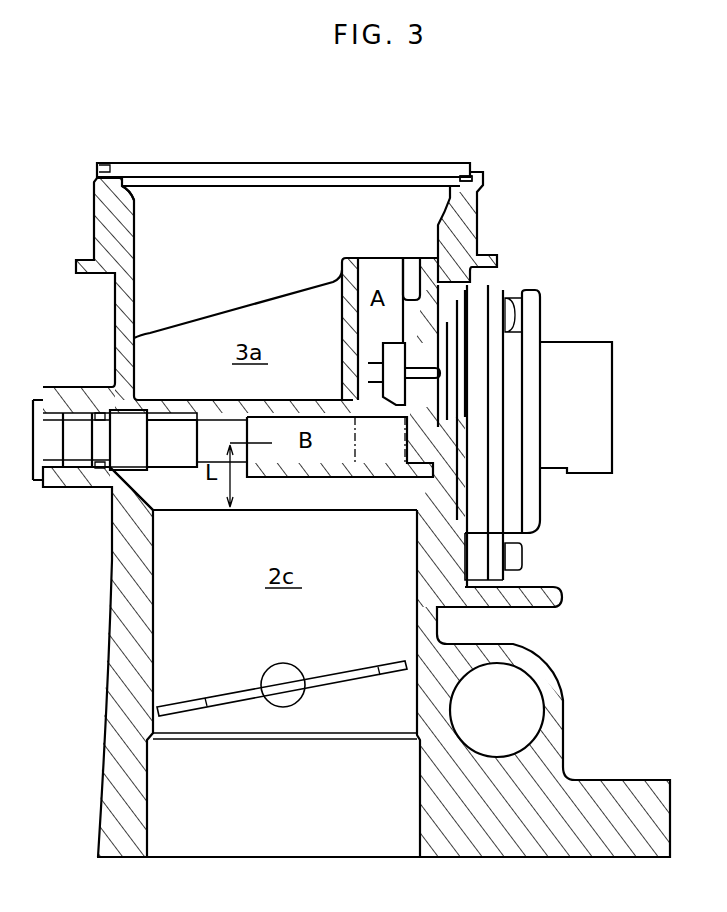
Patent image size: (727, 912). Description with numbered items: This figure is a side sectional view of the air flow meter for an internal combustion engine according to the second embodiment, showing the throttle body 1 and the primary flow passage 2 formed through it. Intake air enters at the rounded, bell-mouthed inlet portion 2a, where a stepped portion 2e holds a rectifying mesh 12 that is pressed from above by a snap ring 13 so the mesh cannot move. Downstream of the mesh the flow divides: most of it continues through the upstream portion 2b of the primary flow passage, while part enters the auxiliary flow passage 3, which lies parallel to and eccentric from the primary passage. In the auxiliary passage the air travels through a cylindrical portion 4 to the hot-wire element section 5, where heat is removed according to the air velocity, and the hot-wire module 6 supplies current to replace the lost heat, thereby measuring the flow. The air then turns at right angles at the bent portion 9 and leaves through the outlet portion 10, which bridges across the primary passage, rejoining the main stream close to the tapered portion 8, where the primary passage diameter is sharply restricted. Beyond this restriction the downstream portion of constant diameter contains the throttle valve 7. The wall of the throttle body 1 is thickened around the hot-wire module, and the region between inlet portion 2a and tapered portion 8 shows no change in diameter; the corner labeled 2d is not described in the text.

The throttle body 1 is at (118, 360).
The primary flow passage 2 is at (232, 193).
The inlet portion 2a is at (147, 170).
The upstream portion 2b is at (200, 250).
The inner corner of reservoir 2d is at (135, 195).
The stepped portion 2e is at (112, 165).
The auxiliary flow passage 3 is at (380, 262).
The cylindrical portion 4 is at (412, 273).
The hot-wire element section 5 is at (442, 288).
The hot-wire module 6 is at (502, 408).
The throttle valve 7 is at (177, 703).
The tapered portion 8 is at (150, 496).
The bent portion 9 is at (393, 448).
The outlet portion 10 is at (247, 445).
The rectifying mesh 12 is at (370, 178).
The snap ring 13 is at (455, 175).